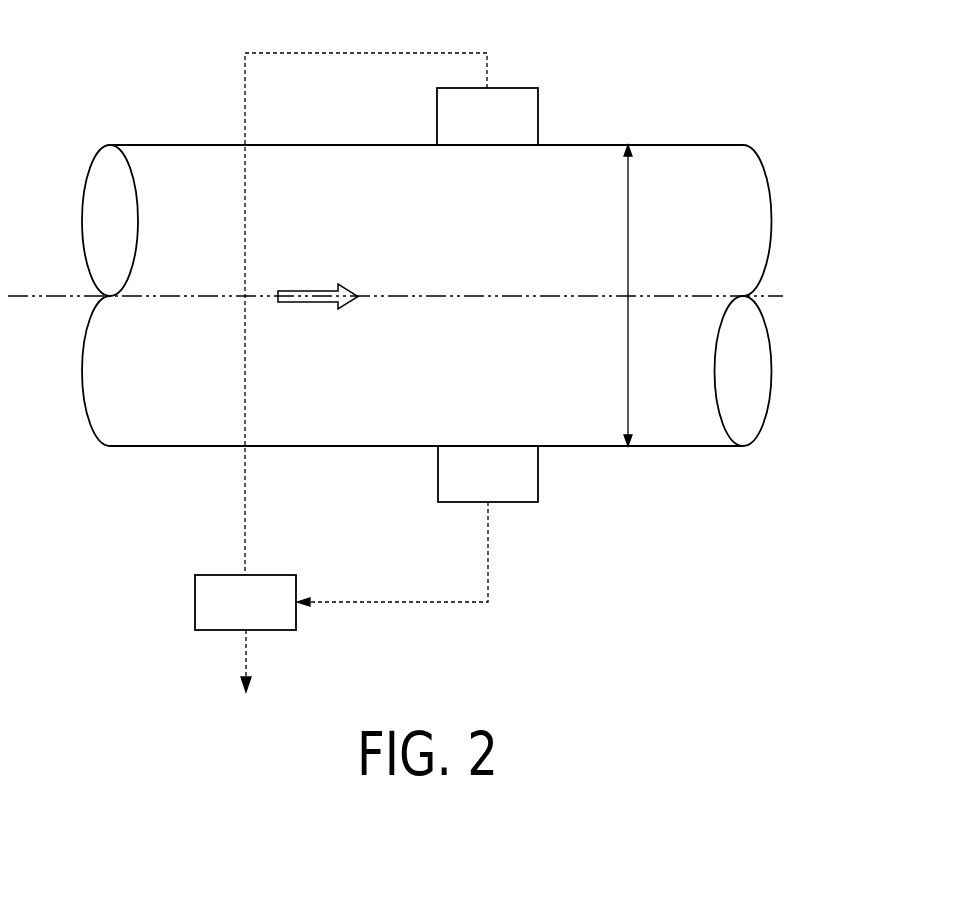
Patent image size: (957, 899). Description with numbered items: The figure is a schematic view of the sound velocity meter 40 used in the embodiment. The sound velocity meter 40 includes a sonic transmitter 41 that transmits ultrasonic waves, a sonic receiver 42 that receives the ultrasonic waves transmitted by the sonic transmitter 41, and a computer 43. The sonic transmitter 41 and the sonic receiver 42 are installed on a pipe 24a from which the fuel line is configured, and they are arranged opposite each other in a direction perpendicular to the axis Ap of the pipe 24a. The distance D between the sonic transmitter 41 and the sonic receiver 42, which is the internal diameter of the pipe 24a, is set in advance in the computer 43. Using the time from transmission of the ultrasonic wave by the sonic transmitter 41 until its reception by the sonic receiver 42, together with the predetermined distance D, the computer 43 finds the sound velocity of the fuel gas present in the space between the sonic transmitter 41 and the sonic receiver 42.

The pipe 24a is at (165, 145).
The axis Ap is at (41, 293).
The distance D is at (639, 295).
The sound velocity meter 40 is at (597, 607).
The sonic transmitter 41 is at (526, 88).
The sonic receiver 42 is at (538, 473).
The computer 43 is at (296, 622).